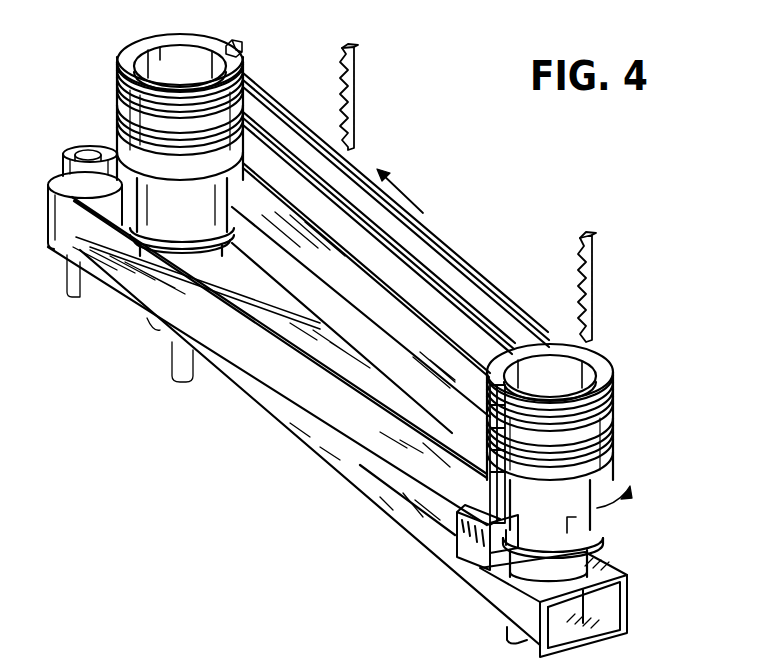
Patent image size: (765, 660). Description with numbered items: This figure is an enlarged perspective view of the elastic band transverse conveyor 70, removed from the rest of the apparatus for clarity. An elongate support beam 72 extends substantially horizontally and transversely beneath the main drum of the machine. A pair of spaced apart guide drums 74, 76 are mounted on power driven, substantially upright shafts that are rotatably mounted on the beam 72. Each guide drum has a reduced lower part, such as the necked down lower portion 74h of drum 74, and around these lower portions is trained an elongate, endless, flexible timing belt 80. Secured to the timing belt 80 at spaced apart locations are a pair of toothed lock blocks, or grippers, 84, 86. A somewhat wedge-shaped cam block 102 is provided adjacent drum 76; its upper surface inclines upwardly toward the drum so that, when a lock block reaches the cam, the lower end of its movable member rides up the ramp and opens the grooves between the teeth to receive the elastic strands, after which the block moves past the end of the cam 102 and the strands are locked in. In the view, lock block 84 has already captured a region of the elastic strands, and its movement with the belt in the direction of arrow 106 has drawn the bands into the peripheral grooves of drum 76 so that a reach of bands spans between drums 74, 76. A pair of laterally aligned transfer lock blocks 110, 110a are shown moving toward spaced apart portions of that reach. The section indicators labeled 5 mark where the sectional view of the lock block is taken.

The elastic band transverse conveyor 70 is at (460, 210).
The elongate support beam 72 is at (395, 508).
The guide drum 74 is at (100, 110).
The necked down lower portion 74h is at (198, 222).
The guide drum 76 is at (612, 374).
The timing belt 80 is at (153, 290).
The lock block 84 is at (244, 42).
The lock block 86 is at (487, 400).
The cam block 102 is at (505, 555).
The arrow 106 is at (398, 190).
The transfer lock block 110 is at (572, 297).
The transfer lock block 110a is at (355, 100).
The section line for FIG. 5 is at (666, 319).